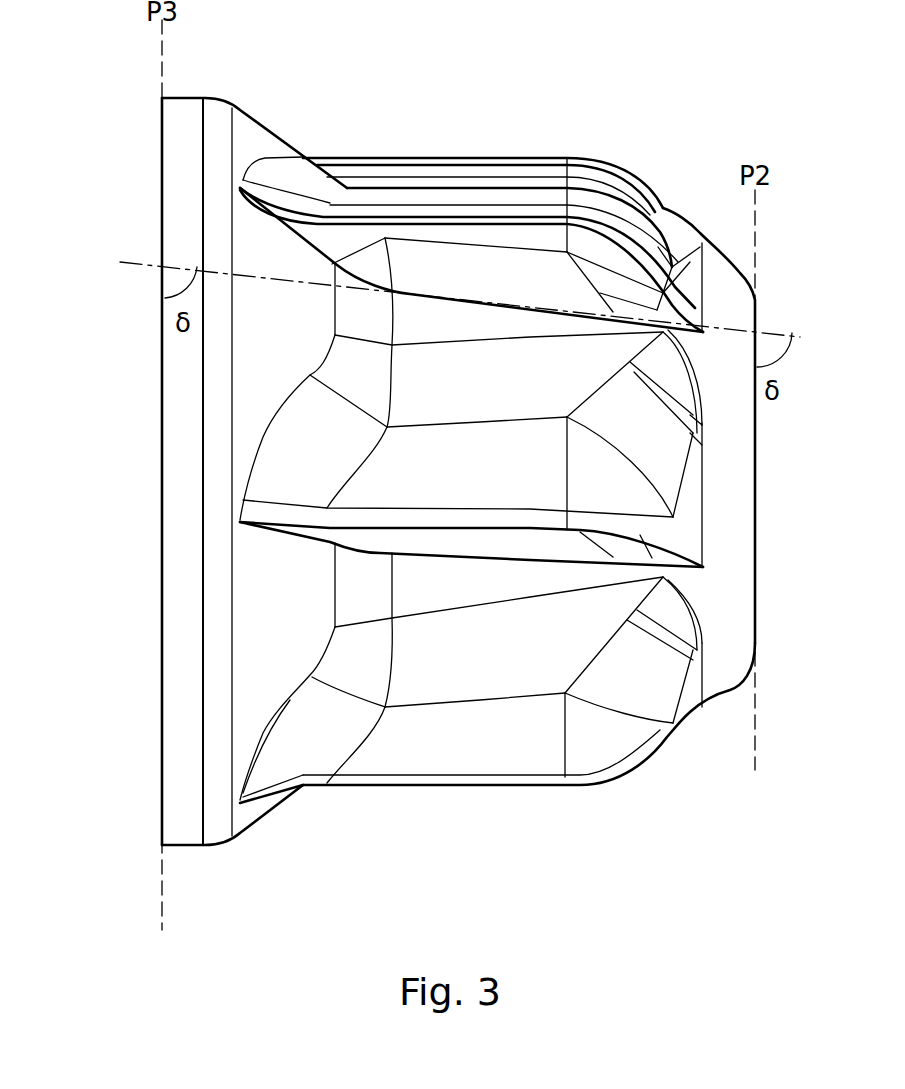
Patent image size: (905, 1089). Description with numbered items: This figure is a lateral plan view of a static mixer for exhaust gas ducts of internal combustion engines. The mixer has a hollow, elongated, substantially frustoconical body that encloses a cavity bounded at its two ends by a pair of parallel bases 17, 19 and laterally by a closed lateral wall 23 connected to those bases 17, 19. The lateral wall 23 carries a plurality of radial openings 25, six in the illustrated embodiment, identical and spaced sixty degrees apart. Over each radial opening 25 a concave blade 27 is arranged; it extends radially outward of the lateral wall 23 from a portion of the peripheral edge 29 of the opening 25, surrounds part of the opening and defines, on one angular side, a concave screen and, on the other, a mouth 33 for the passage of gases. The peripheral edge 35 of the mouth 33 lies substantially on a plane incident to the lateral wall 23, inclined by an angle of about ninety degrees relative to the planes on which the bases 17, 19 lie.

The base 17 is at (752, 600).
The base 19 is at (158, 582).
The lateral wall 23 is at (450, 587).
The radial opening 25 is at (547, 280).
The concave blade 27 is at (420, 190).
The peripheral edge 29 is at (543, 563).
The mouth 33 is at (471, 230).
The peripheral edge 35 is at (490, 530).